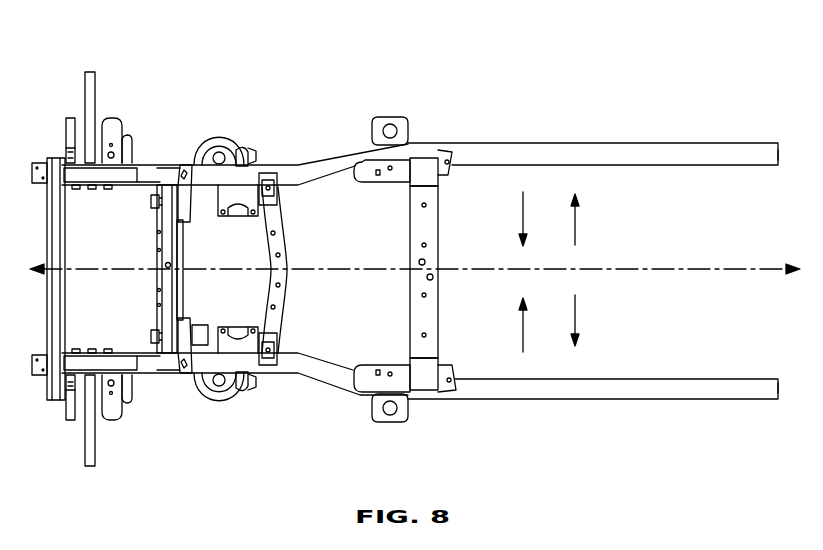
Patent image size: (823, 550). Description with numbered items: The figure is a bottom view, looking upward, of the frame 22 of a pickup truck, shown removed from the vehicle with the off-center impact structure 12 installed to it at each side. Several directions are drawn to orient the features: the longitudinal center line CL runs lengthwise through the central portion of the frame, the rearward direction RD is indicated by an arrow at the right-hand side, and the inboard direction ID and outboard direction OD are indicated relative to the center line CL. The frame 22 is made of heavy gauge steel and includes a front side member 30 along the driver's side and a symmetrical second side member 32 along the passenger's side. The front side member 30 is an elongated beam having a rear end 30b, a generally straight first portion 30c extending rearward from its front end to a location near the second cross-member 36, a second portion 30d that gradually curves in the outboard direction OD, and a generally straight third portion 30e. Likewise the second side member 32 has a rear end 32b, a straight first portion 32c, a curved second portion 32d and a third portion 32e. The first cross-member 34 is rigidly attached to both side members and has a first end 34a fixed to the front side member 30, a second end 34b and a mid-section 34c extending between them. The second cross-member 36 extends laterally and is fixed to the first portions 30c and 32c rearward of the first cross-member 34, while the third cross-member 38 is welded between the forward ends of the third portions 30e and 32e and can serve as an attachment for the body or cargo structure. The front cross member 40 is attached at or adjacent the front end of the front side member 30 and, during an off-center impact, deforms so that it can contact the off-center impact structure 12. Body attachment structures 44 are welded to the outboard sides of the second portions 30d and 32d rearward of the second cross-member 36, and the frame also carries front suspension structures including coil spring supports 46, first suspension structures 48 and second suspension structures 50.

The off-center impact structure 12 is at (78, 92).
The frame 22 is at (492, 51).
The front side member 30 is at (298, 160).
The rear end 30b is at (778, 155).
The first portion 30c is at (270, 66).
The second portion 30d is at (418, 102).
The third portion 30e is at (778, 102).
The second side member 32 is at (298, 380).
The rear end 32b is at (778, 388).
The first portion 32c is at (270, 474).
The second portion 32d is at (418, 440).
The third portion 32e is at (778, 440).
The first cross-member 34 is at (166, 257).
The first end 34a is at (151, 206).
The second end 34b is at (151, 333).
The mid-section 34c is at (183, 244).
The second cross-member 36 is at (285, 293).
The third cross-member 38 is at (420, 223).
The front cross member 40 is at (66, 287).
The body attachment structure 44 is at (372, 140).
The coil spring support 46 is at (211, 140).
The first suspension structure 48 is at (179, 168).
The second suspension structure 50 is at (267, 173).
The inboard direction ID is at (523, 333).
The outboard direction OD is at (575, 228).
The longitudinal center line CL is at (674, 268).
The rearward direction RD is at (756, 274).